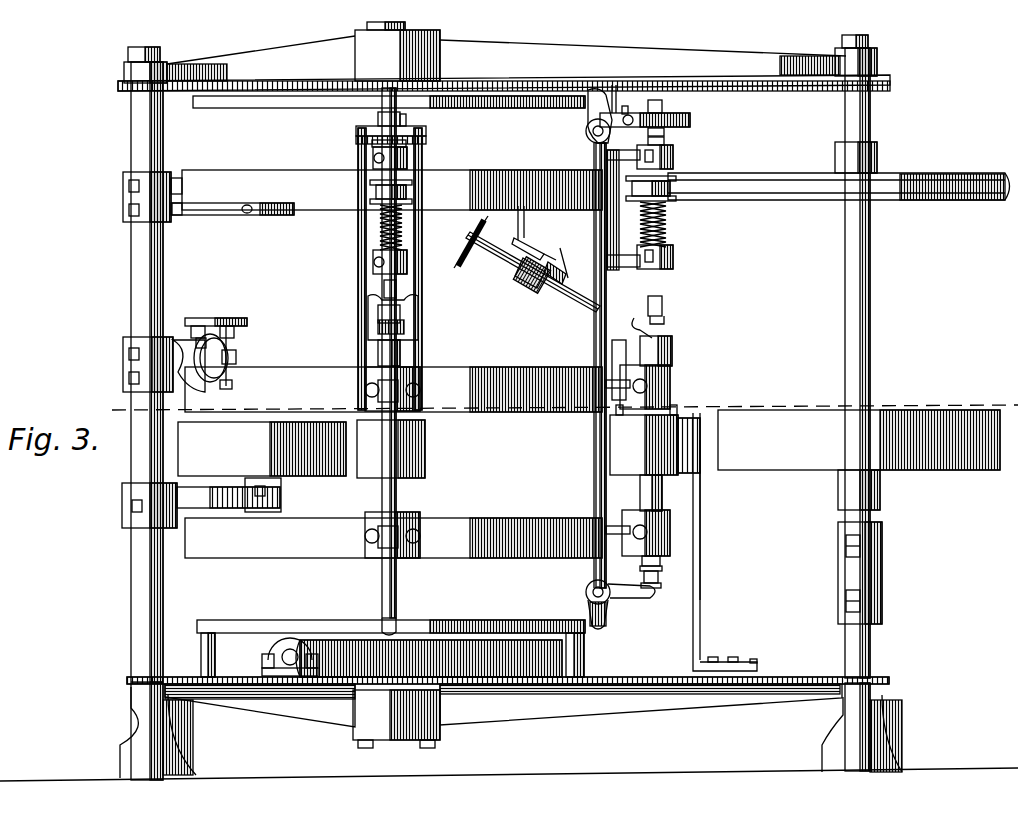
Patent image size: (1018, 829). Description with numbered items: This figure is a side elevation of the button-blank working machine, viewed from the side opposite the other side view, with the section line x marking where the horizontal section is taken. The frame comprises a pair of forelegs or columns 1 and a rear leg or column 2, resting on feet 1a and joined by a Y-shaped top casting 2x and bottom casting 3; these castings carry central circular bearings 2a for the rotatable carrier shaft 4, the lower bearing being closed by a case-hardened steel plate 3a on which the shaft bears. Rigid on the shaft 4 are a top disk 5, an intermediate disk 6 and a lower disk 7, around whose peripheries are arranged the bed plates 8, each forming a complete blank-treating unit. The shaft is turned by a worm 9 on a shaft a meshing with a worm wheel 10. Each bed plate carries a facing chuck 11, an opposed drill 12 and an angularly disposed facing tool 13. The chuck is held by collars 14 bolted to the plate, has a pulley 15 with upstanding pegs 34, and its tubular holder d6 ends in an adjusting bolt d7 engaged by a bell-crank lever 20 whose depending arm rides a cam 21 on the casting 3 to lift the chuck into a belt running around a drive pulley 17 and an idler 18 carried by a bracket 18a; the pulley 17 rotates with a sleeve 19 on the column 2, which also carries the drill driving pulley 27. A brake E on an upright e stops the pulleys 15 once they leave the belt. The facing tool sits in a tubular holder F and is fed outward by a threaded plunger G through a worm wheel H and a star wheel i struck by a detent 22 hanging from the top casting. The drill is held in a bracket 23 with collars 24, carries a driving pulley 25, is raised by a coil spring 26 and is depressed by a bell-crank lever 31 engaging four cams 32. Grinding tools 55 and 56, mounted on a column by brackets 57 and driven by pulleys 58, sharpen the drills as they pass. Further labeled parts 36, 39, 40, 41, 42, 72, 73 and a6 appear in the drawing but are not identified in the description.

The forelegs or columns 1 is at (131, 298).
The feet 1a is at (842, 730).
The rear leg or column 2 is at (870, 128).
The circular bearings 2a is at (432, 36).
The top casting 2x is at (504, 63).
The bottom casting 3 is at (508, 702).
The case-hardened steel plate 3a is at (405, 738).
The rotatable shaft 4 is at (366, 26).
The top ring or disk 5 is at (392, 190).
The central or intermediate ring or disk 6 is at (393, 389).
The lower ring or disk 7 is at (393, 538).
The bed plates 8 is at (358, 296).
The worm 9 is at (290, 642).
The worm wheel 10 is at (438, 640).
The facing chuck 11 is at (402, 345).
The drill 12 is at (398, 300).
The facing tool 13 is at (368, 329).
The collars 14 is at (422, 390).
The pulley 15 is at (655, 445).
The drive pulley 17 is at (859, 440).
The idler 18 is at (301, 449).
The bracket 18a is at (240, 508).
The sleeve 19 is at (870, 283).
The bell-crank lever 20 is at (608, 612).
The cam 21 is at (232, 615).
The detent 22 is at (520, 228).
The bracket 23 is at (596, 228).
The bearings or collars 24 is at (408, 156).
The driving pulley 25 is at (412, 192).
The coil spring 26 is at (380, 232).
The driving pulley 27 is at (802, 174).
The bell-crank lever 31 is at (588, 112).
The cams 32 is at (470, 110).
The pegs 34 is at (616, 412).
The nut 36 is at (662, 108).
The screw 39 is at (376, 124).
The nut 40 is at (408, 132).
The pin 41 is at (406, 120).
The rod 42 is at (616, 84).
The grinding tool 55 is at (202, 324).
The grinding tool 56 is at (246, 324).
The brackets 57 is at (125, 366).
The pulleys 58 is at (237, 356).
The collar 72 is at (176, 180).
The arm 73 is at (272, 216).
The shaft of the worm a is at (294, 650).
The rod a6 is at (662, 496).
The tubular holder d6 is at (641, 565).
The adjusting bolt d7 is at (662, 580).
The upright e is at (701, 520).
The brake E is at (695, 420).
The tubular holder F is at (556, 282).
The screw threaded plunger G is at (520, 268).
The worm wheel H is at (531, 286).
The star wheel i is at (558, 256).
The section line x is at (555, 411).